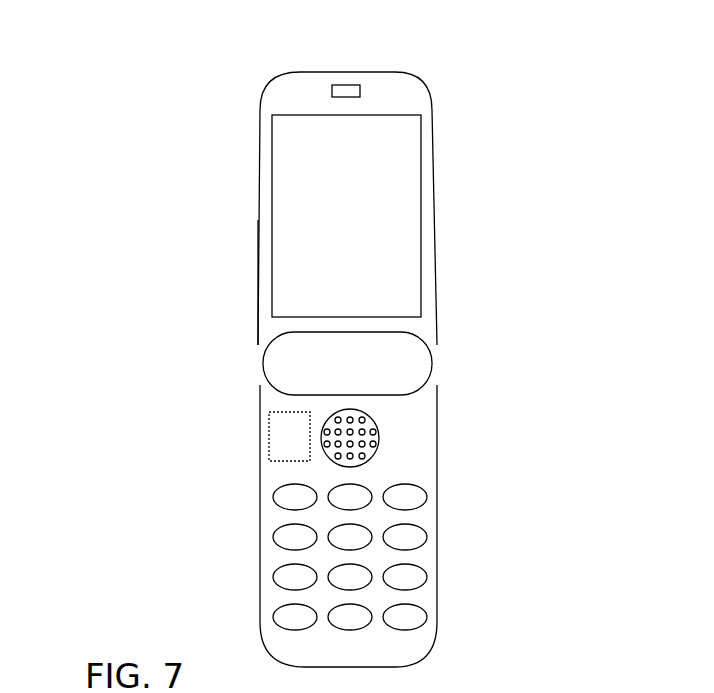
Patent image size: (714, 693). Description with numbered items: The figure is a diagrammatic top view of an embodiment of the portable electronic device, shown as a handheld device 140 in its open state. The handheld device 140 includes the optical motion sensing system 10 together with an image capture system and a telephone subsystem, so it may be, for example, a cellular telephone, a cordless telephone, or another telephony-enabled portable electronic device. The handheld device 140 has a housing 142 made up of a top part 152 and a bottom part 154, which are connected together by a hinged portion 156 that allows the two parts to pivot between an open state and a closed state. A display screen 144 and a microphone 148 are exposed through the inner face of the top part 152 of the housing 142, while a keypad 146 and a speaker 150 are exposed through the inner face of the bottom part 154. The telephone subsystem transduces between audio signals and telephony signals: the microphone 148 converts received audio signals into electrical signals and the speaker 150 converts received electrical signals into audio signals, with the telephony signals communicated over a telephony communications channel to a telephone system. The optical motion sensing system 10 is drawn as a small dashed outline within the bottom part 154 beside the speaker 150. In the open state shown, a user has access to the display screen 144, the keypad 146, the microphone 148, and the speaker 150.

The handheld device 140 is at (127, 124).
The housing 142 is at (476, 152).
The display screen 144 is at (372, 226).
The keypad 146 is at (433, 522).
The microphone 148 is at (346, 85).
The speaker 150 is at (379, 428).
The top part of the housing 152 is at (258, 218).
The bottom part of the housing 154 is at (260, 508).
The hinged portion 156 is at (263, 365).
The optical motion sensing system 10 is at (292, 437).